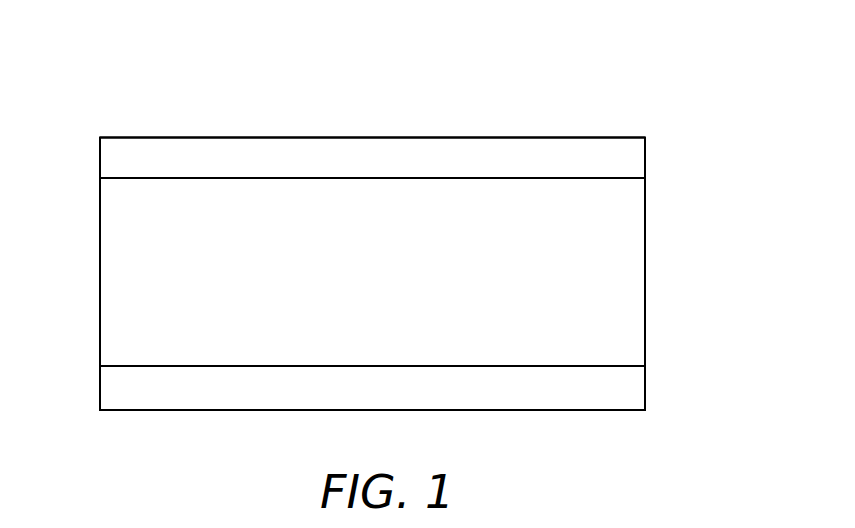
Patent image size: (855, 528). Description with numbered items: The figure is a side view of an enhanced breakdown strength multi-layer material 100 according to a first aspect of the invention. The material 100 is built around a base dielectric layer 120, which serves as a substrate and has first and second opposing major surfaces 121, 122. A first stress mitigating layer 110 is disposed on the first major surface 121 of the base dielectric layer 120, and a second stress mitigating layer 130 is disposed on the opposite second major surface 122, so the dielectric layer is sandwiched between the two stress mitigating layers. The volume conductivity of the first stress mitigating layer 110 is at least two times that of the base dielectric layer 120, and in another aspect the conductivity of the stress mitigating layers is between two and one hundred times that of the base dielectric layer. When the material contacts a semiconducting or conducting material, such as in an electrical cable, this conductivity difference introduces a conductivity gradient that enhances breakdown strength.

The enhanced breakdown strength multi-layer material 100 is at (170, 68).
The first stress mitigating layer 110 is at (531, 157).
The base dielectric layer 120 is at (612, 248).
The first major surface 121 is at (615, 177).
The second major surface 122 is at (614, 368).
The second stress mitigating layer 130 is at (556, 393).